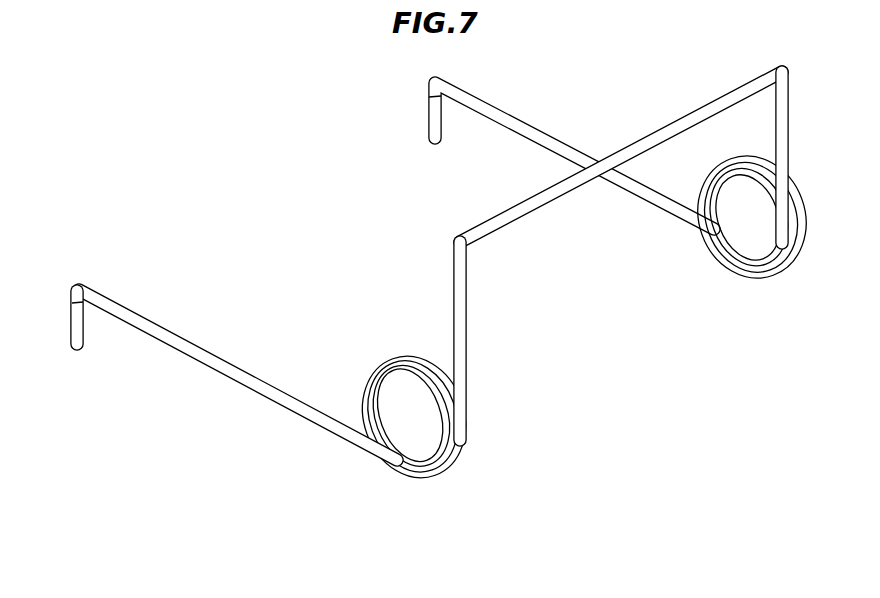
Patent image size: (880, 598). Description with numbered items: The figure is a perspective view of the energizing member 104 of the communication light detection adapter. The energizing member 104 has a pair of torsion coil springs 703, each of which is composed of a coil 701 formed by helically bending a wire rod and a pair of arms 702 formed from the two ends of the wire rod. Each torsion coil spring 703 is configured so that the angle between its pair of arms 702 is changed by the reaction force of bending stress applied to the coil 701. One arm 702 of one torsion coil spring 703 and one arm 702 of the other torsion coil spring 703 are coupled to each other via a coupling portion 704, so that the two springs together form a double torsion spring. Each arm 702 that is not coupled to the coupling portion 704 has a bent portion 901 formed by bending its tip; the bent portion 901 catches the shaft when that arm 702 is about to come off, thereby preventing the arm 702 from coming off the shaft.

The energizing member 104 is at (212, 108).
The coil 701 is at (382, 365).
The arm 702 is at (462, 320).
The torsion coil spring 703 is at (473, 465).
The coupling portion 704 is at (577, 184).
The bent portion 901 is at (84, 328).